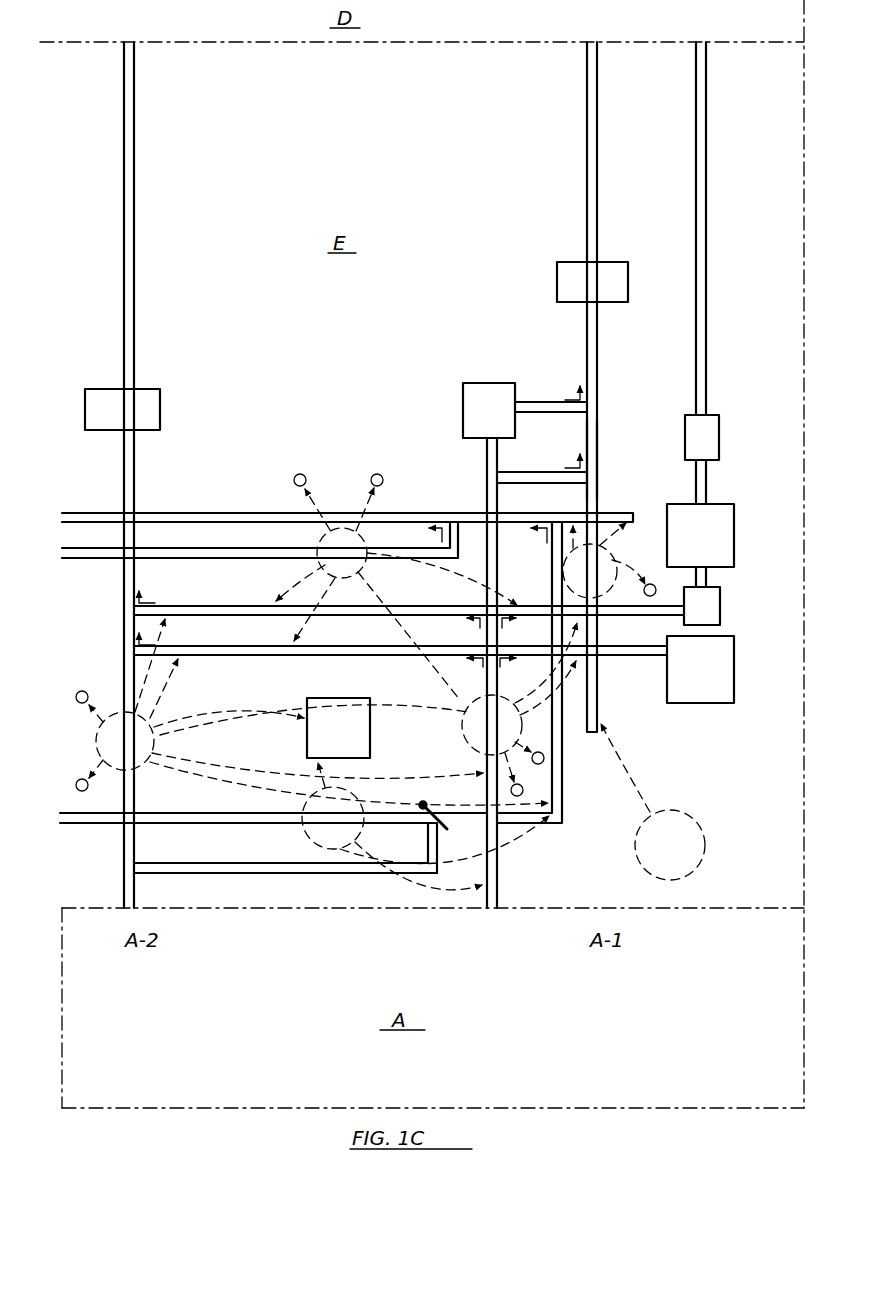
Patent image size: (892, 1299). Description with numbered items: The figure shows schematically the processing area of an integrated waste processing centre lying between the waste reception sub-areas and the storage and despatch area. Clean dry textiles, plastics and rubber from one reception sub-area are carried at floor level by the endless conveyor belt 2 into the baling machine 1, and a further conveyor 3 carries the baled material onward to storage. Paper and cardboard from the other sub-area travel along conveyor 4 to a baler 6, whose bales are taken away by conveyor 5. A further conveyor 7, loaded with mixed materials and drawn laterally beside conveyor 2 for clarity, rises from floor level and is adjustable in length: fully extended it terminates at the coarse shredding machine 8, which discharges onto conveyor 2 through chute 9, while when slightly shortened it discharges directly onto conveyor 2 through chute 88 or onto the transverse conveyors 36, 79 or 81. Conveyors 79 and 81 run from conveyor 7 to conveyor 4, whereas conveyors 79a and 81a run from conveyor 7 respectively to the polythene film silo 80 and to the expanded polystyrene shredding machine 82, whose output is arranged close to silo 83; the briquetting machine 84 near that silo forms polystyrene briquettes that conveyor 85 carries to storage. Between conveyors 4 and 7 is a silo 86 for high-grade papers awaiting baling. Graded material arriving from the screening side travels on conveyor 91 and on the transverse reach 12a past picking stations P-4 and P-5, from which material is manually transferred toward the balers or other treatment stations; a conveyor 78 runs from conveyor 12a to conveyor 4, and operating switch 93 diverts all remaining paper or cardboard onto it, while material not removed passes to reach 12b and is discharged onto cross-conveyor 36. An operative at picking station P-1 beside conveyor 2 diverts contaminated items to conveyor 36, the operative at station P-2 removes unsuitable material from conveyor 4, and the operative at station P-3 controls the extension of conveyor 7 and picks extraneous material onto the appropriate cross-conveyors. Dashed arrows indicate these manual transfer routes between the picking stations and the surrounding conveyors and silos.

The baling machine 1 is at (629, 281).
The endless conveyor belt 2 is at (598, 420).
The conveyor 3 is at (598, 160).
The conveyor 4 is at (135, 797).
The conveyor 5 is at (135, 232).
The baler 6 is at (161, 409).
The conveyor 7 is at (498, 891).
The coarse shredding machine 8 is at (463, 410).
The chute 9 is at (547, 401).
The conveyor extension 12a is at (258, 813).
The conveyor extension 12b is at (564, 790).
The transverse conveyor 36 is at (95, 512).
The conveyor 78 is at (233, 873).
The conveyor 79 is at (206, 656).
The conveyor 79a is at (588, 660).
The silo 80 is at (694, 703).
The conveyor 81 is at (206, 607).
The conveyor 81a is at (530, 604).
The shredding machine 82 is at (721, 591).
The silo 83 is at (735, 540).
The machine for production of polystyrene briquettes 84 is at (720, 444).
The conveyor 85 is at (707, 283).
The silo 86 is at (340, 698).
The chute 88 is at (553, 471).
The conveyor 91 is at (110, 560).
The switch 93 is at (433, 803).
The picking station P-1 is at (615, 560).
The picking station P-2 is at (160, 746).
The picking station P-3 is at (462, 748).
The picking station P-4 is at (360, 573).
The picking station P-5 is at (358, 795).